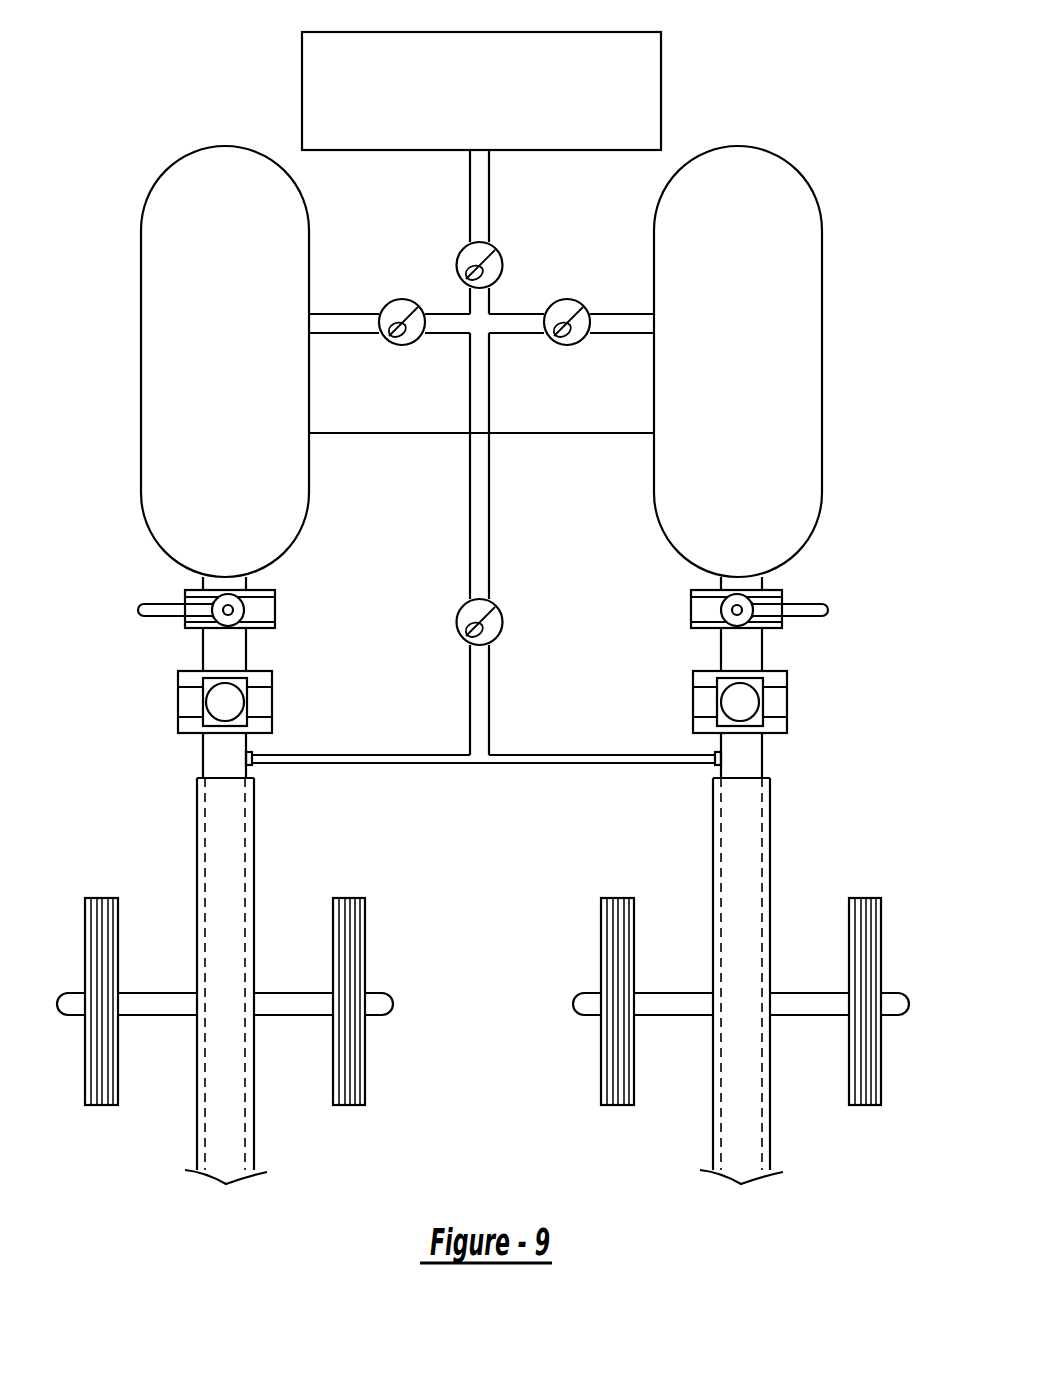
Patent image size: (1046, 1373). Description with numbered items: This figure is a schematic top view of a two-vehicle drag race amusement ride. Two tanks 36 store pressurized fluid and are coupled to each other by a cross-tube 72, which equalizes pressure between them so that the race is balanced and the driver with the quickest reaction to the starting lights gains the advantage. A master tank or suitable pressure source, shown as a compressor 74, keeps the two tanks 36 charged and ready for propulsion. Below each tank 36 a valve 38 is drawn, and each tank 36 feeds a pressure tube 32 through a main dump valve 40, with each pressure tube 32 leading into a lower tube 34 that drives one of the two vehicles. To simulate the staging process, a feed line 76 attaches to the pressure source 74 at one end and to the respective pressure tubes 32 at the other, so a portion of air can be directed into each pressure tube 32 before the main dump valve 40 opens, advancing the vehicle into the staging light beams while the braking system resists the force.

The compressor 74 is at (635, 90).
The cross-tube 72 is at (521, 323).
The tank 36 is at (168, 413).
The shut-off valve 38 is at (275, 605).
The main dump valve 40 is at (270, 698).
The pressure tube 32 is at (212, 759).
The support tube 34 is at (197, 835).
The feed line 76 is at (453, 763).